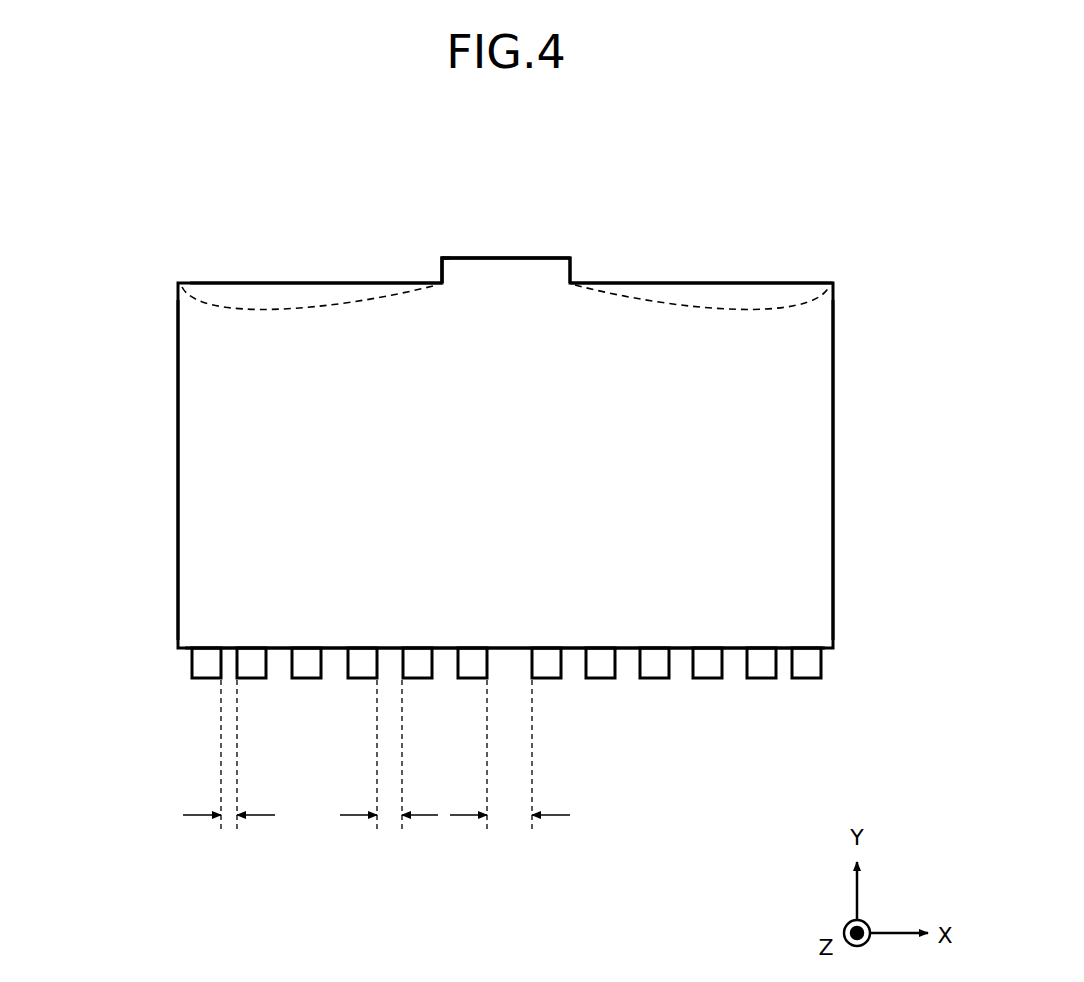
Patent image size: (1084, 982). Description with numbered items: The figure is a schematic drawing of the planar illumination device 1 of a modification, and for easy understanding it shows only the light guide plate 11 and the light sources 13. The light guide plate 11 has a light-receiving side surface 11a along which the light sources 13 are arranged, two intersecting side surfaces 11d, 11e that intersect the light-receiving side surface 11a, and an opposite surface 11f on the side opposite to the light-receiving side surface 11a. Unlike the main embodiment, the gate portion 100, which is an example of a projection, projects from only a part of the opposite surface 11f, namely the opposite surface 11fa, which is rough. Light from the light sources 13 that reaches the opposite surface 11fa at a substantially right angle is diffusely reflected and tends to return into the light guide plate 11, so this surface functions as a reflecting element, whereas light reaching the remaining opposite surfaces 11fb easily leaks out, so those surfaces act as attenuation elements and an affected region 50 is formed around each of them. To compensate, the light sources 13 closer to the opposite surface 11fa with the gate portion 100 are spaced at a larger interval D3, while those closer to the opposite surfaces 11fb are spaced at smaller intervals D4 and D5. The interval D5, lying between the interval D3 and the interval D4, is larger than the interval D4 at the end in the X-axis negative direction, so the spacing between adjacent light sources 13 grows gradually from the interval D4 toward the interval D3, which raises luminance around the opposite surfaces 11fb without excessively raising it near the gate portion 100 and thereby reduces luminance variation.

The planar illumination device 1 is at (80, 218).
The light guide plate 11 is at (178, 340).
The light-receiving side surface 11a is at (280, 648).
The intersecting side surface 11d is at (833, 463).
The intersecting side surface 11e is at (178, 460).
The opposite surface 11f is at (313, 168).
The opposite surface 11fa is at (500, 258).
The opposite surfaces 11fb is at (338, 283).
The light sources 13 is at (192, 660).
The affected region 50 is at (243, 294).
The gate portion 100 is at (430, 256).
The interval D3 is at (508, 816).
The interval D4 is at (222, 816).
The interval D5 is at (385, 816).